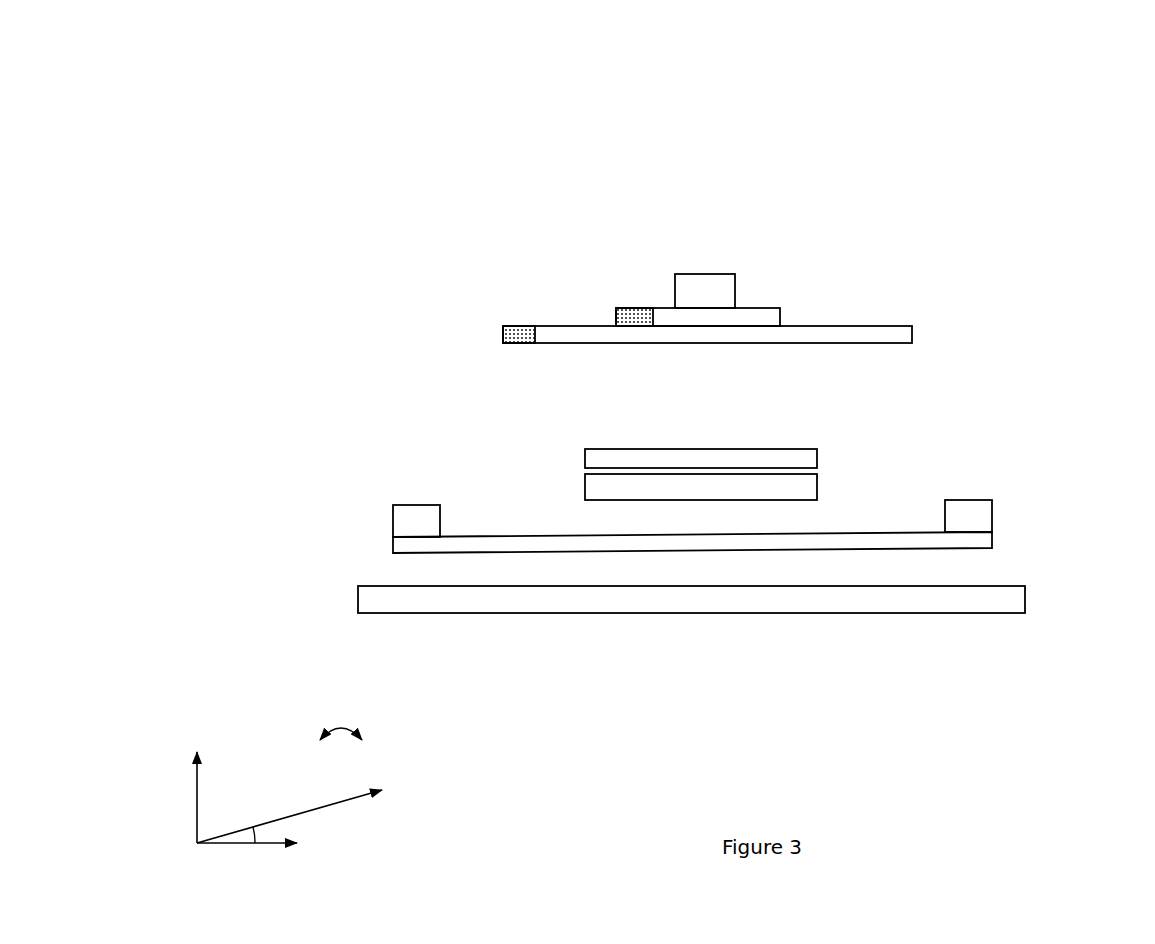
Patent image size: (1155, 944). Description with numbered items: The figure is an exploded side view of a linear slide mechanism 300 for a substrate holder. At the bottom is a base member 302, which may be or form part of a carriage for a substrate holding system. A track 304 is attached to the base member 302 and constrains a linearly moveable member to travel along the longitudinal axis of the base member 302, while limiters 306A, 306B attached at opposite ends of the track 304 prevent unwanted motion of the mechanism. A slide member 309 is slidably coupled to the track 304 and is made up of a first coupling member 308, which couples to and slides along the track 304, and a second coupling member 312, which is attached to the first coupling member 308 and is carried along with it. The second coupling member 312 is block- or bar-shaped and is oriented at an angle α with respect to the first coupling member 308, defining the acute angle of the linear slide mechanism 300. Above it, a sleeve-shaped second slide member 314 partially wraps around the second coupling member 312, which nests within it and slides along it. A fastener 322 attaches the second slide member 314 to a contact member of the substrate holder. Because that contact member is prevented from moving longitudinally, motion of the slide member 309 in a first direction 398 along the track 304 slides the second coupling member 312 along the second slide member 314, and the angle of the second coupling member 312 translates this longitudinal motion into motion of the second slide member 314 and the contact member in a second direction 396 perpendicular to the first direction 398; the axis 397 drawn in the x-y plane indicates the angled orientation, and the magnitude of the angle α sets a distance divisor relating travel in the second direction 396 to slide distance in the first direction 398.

The linear slide mechanism 300 is at (215, 112).
The base member 302 is at (1028, 597).
The track 304 is at (392, 543).
The limiter 306A is at (392, 518).
The limiter 306B is at (994, 515).
The first coupling member 308 is at (582, 486).
The slide member 309 is at (555, 435).
The second coupling member 312 is at (820, 458).
The second slide member 314 is at (914, 335).
The fastener 322 is at (705, 268).
The second direction 396 is at (201, 769).
The rotated axis in x-y plane 397 is at (382, 784).
The first direction 398 is at (336, 845).